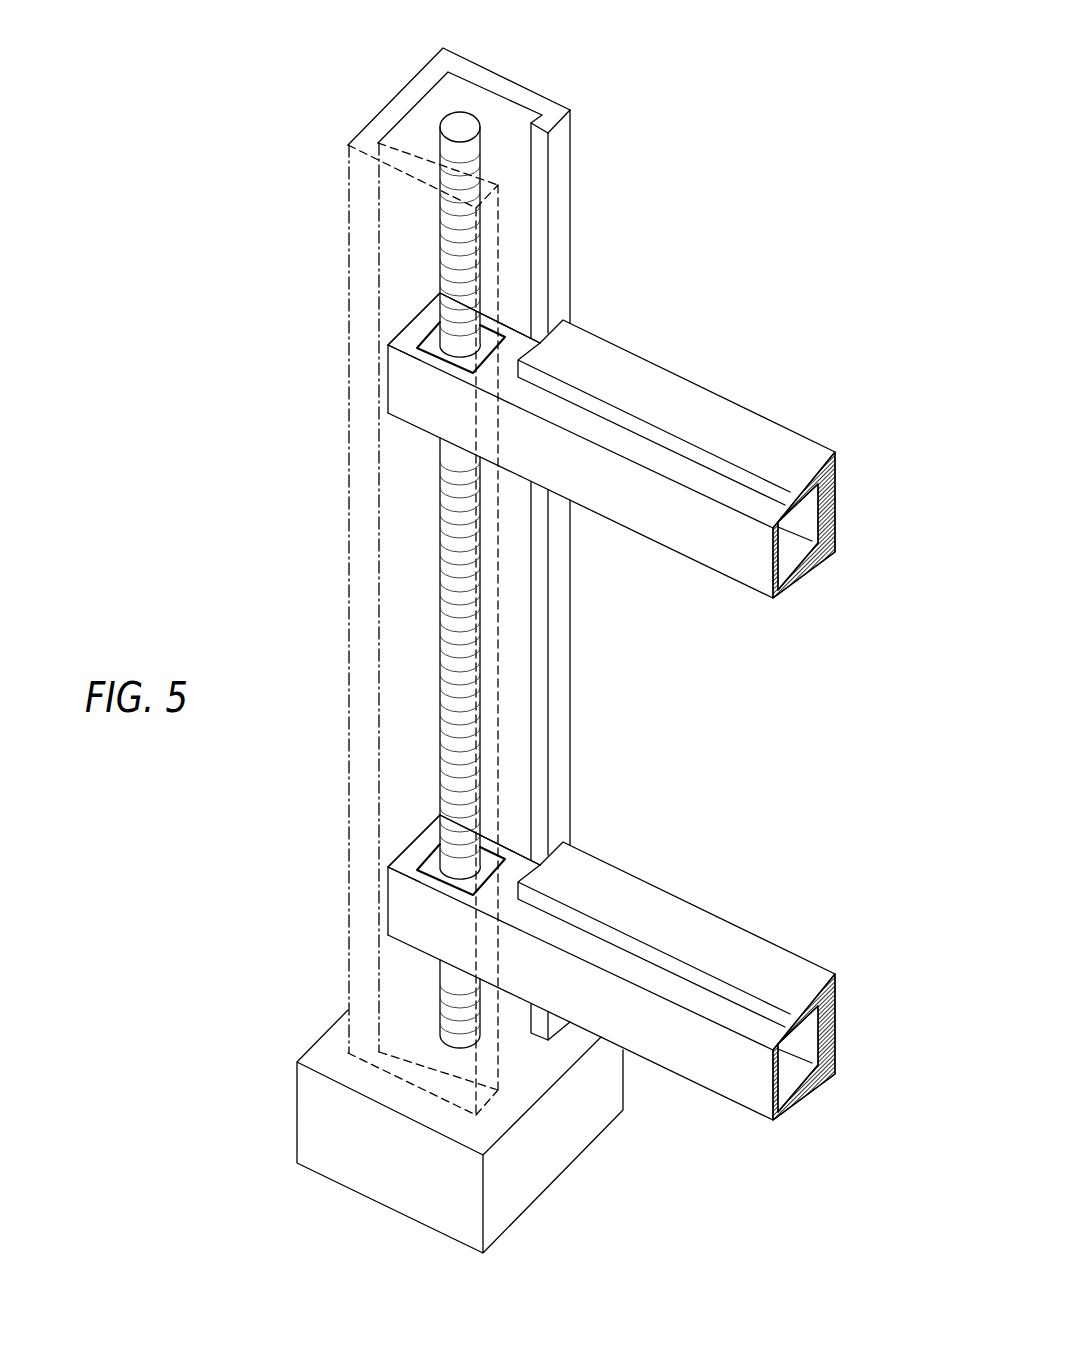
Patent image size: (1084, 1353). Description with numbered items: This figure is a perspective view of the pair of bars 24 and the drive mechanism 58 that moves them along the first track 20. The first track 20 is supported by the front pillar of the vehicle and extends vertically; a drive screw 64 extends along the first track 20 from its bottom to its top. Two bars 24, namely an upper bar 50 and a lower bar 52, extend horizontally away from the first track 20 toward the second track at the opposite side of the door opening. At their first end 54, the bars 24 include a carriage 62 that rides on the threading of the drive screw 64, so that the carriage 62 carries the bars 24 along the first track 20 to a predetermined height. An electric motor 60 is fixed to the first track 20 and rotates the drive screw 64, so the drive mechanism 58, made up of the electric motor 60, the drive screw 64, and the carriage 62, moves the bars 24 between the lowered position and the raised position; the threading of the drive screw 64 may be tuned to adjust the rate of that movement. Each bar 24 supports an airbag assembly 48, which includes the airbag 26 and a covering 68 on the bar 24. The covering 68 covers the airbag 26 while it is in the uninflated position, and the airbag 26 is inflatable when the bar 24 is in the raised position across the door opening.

The first track 20 is at (348, 209).
The bar 24 is at (613, 447).
The airbag 26 is at (836, 526).
The airbag assembly 48 is at (716, 707).
The upper bar 50 is at (386, 388).
The lower bar 52 is at (386, 910).
The first end 54 is at (387, 357).
The drive mechanism 58 is at (401, 1131).
The electric motor 60 is at (553, 1178).
The carriage 62 is at (487, 342).
The drive screw 64 is at (438, 615).
The covering 68 is at (738, 437).